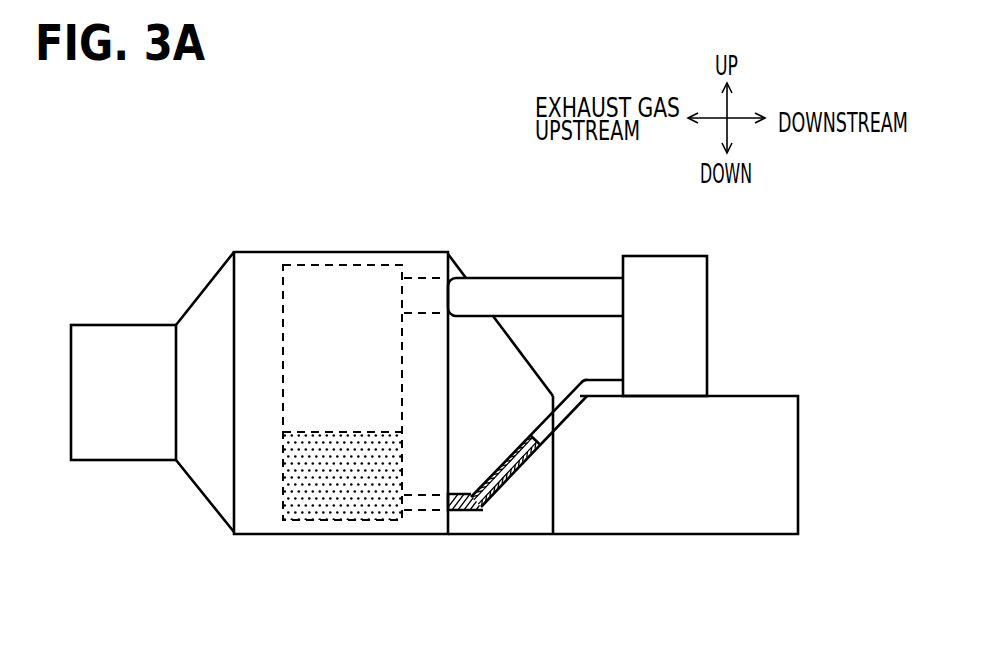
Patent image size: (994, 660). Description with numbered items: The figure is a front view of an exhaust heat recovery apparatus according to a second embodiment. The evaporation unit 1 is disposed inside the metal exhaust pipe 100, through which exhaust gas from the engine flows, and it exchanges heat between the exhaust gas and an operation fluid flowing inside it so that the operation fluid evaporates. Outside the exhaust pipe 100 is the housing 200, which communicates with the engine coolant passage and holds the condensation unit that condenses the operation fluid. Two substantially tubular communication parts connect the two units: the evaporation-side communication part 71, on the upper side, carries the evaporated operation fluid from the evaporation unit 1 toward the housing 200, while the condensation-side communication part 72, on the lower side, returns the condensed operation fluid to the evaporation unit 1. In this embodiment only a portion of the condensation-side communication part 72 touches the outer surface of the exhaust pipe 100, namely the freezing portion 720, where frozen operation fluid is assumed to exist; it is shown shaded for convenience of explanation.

The evaporation unit 1 is at (317, 287).
The exhaust pipe 100 is at (253, 513).
The evaporation-side communication part 71 is at (551, 293).
The condensation-side communication part 72 is at (573, 417).
The freezing portion 720 is at (487, 513).
The housing 200 is at (688, 358).